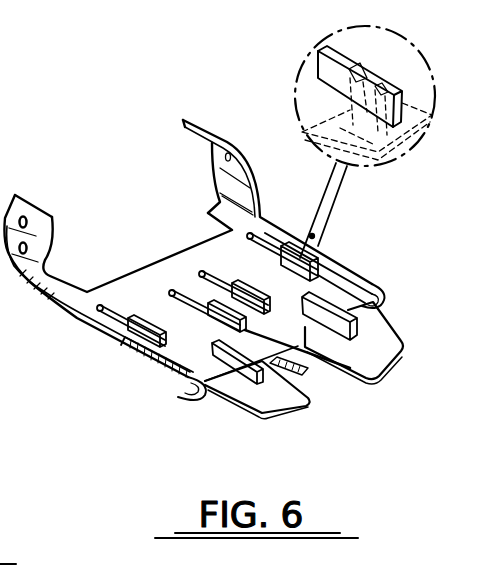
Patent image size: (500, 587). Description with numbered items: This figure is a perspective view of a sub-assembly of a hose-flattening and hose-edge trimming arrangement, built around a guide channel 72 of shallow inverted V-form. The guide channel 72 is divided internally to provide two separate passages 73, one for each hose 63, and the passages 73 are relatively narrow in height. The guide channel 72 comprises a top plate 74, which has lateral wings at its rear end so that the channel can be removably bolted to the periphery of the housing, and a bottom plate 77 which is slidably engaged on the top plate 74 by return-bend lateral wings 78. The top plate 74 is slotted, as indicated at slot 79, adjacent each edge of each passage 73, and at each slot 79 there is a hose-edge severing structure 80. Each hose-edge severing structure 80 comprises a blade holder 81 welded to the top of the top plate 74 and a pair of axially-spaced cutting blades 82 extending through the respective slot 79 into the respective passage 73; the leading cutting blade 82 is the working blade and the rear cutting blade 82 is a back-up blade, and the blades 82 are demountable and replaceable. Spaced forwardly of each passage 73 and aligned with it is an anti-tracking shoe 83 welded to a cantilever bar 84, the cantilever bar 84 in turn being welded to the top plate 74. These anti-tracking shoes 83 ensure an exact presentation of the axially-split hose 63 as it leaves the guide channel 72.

The hose 63 is at (405, 133).
The guide channel 72 is at (267, 222).
The passage 73 is at (385, 300).
The top plate 74 is at (298, 292).
The bottom plate 77 is at (310, 375).
The return-bend lateral wings 78 is at (142, 378).
The slot 79 is at (265, 287).
The hose-edge severing structure 80 is at (375, 70).
The blade holder 81 is at (338, 77).
The cutting blade 82 is at (384, 90).
The anti-tracking shoe 83 is at (372, 353).
The cantilever bar 84 is at (358, 328).